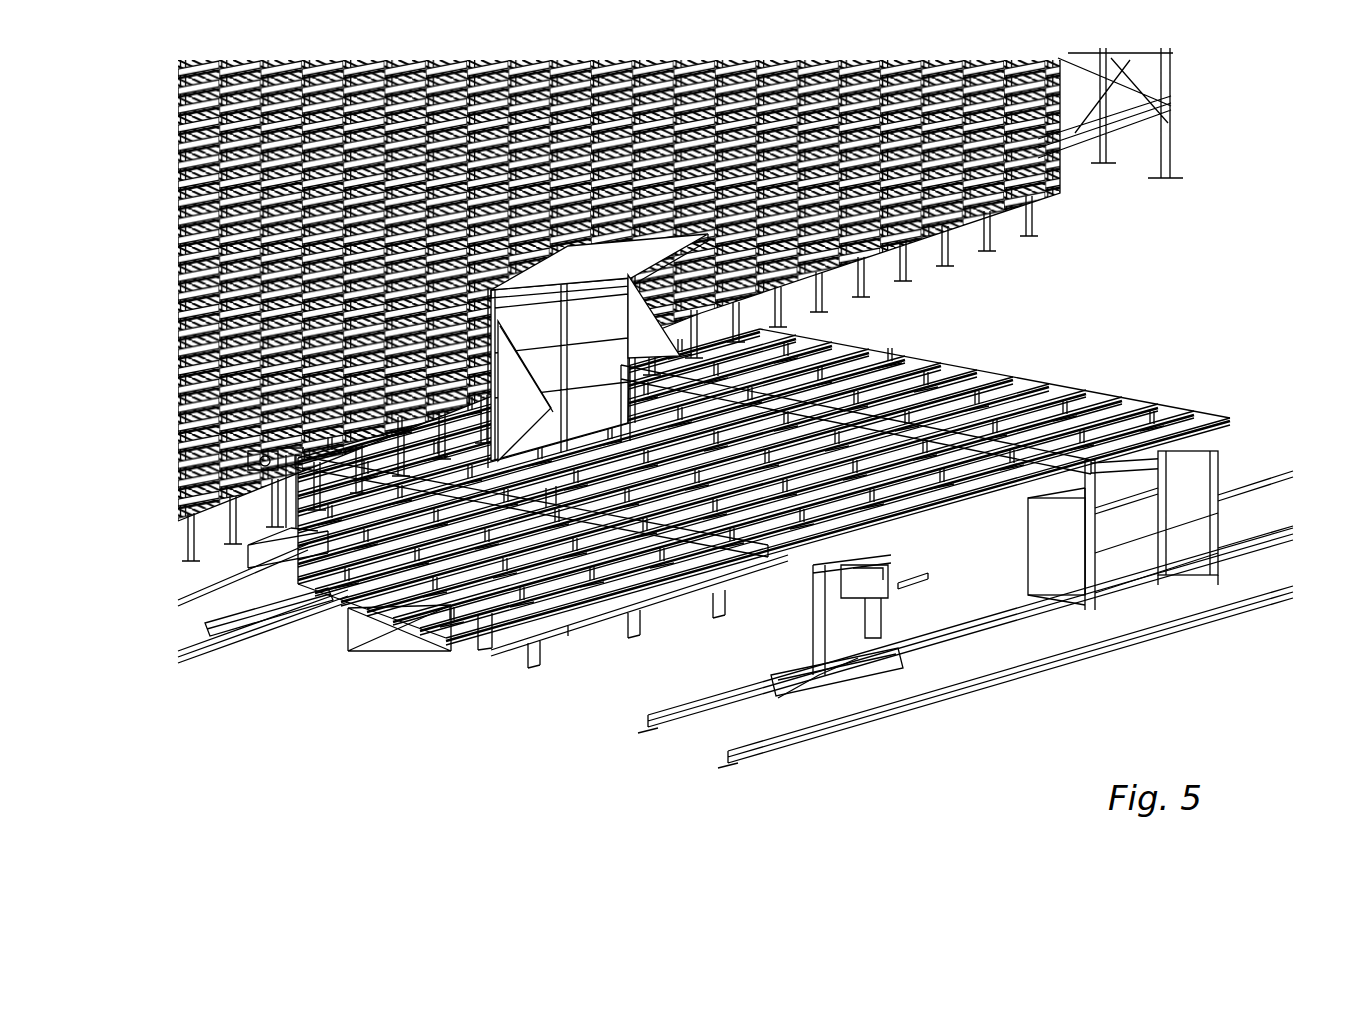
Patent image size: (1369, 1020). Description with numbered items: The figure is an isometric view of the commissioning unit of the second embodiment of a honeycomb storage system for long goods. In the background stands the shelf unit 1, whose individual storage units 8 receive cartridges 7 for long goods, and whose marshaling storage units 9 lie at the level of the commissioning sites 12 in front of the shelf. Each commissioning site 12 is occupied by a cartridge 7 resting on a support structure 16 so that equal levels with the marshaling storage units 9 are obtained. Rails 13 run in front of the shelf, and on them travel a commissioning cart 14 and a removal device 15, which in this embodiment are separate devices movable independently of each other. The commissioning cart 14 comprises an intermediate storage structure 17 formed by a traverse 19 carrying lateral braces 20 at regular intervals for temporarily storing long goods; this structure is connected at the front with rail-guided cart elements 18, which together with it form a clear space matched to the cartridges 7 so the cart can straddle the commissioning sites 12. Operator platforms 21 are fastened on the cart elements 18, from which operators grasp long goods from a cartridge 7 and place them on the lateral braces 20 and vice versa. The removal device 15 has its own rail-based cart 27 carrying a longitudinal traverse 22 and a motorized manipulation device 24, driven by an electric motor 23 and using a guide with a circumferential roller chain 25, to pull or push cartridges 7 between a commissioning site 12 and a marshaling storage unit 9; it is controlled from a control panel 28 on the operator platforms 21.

The first shelf unit 1 is at (168, 165).
The cartridge 7 is at (557, 623).
The individual storage units 8 is at (1037, 158).
The marshaling storage units 9 is at (170, 517).
The commissioning sites 12 is at (905, 578).
The rails 13 is at (185, 593).
The commissioning cart 14 is at (1133, 520).
The removal device 15 is at (860, 660).
The support structure 16 is at (480, 608).
The intermediate storage structure 17 is at (1040, 457).
The cart element 18 is at (1047, 583).
The traverse 19 is at (937, 433).
The lateral braces 20 is at (1000, 467).
The operator platforms 21 is at (1187, 477).
The longitudinal traverse 22 is at (543, 497).
The electric motor 23 is at (878, 650).
The manipulation device 24 is at (392, 478).
The circumferential roller chain 25 is at (385, 487).
The rail-based cart 27 is at (790, 700).
The control panel 28 is at (700, 362).